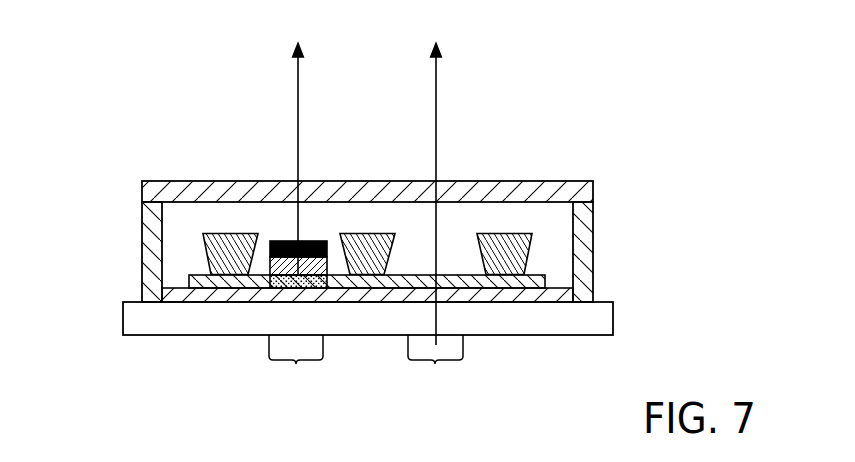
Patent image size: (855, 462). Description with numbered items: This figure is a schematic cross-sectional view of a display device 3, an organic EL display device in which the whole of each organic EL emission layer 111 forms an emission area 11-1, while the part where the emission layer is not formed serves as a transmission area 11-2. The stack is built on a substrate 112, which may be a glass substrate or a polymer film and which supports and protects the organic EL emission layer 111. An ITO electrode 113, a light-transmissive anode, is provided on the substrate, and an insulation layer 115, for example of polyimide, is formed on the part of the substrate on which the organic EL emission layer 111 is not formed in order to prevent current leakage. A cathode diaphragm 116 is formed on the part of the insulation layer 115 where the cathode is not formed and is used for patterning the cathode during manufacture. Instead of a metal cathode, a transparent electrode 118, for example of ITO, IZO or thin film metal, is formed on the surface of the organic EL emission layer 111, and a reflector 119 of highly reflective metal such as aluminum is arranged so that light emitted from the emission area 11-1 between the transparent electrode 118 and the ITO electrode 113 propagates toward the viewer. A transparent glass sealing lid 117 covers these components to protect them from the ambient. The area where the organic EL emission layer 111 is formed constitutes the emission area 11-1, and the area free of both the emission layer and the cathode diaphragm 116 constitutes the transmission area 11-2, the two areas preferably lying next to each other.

The display device 3 is at (685, 95).
The organic EL emission layer 111 is at (327, 265).
The substrate 112 is at (613, 305).
The ITO electrode 113 is at (175, 295).
The insulation layer 115 is at (191, 275).
The cathode diaphragm 116 is at (517, 233).
The transparent glass sealing lid 117 is at (573, 181).
The transparent electrode 118 is at (271, 242).
The reflector 119 is at (274, 289).
The emission area 11-1 is at (296, 218).
The transmission area 11-2 is at (435, 218).